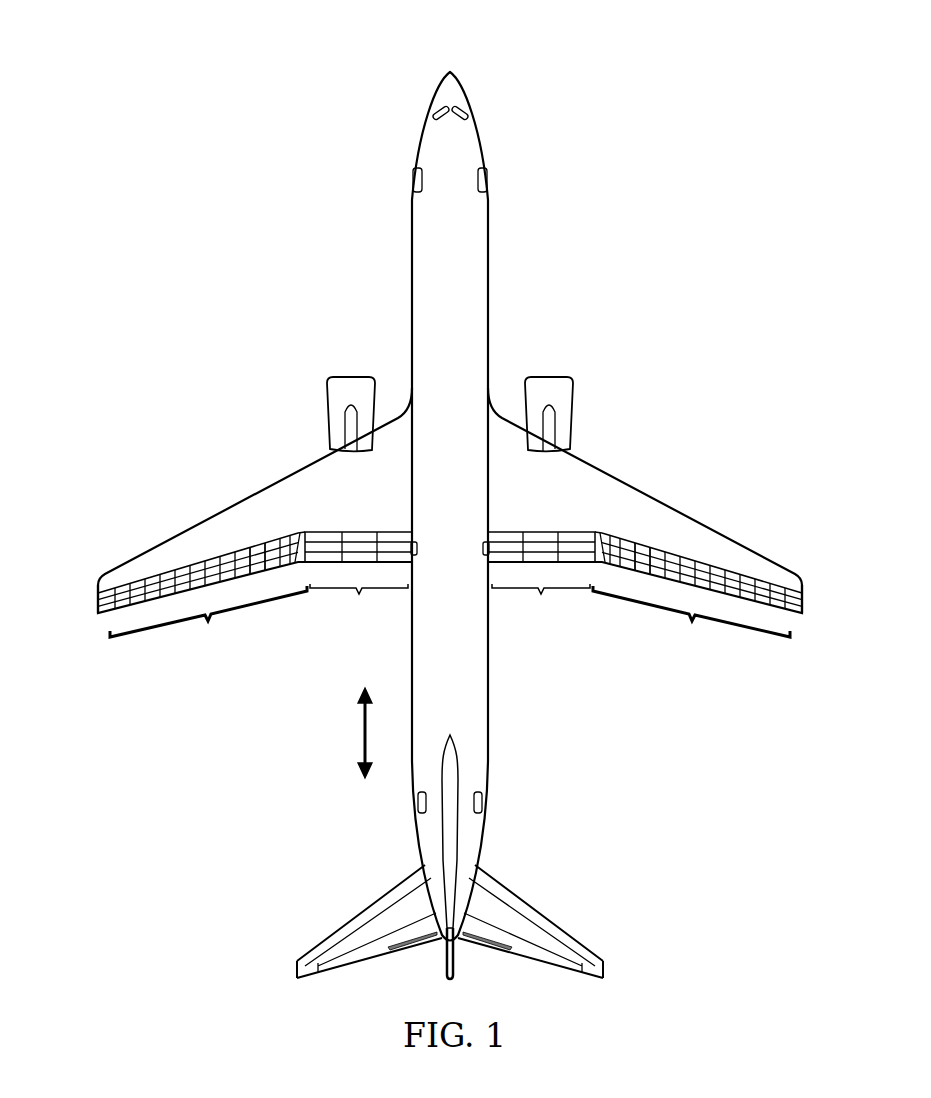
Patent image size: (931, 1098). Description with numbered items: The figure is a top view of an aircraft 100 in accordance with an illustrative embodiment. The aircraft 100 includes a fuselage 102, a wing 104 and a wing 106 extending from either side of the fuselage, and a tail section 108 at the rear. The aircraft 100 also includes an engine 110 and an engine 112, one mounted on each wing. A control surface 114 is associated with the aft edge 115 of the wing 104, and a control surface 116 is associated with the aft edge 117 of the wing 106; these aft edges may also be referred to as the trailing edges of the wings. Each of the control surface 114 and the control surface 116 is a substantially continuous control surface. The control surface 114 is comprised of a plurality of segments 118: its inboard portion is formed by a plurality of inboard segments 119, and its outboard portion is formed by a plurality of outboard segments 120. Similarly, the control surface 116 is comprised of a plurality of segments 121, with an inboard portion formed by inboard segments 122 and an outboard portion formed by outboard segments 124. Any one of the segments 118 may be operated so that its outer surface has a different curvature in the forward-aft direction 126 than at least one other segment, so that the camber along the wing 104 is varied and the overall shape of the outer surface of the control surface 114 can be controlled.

The aircraft 100 is at (410, 71).
The fuselage 102 is at (490, 223).
The wing 104 is at (236, 484).
The wing 106 is at (659, 484).
The tail section 108 is at (373, 975).
The engine 110 is at (344, 362).
The engine 112 is at (556, 362).
The control surface 114 is at (261, 586).
The aft edge 115 is at (96, 624).
The control surface 116 is at (639, 586).
The aft edge 117 is at (804, 624).
The segments 118 is at (180, 554).
The inboard segments 119 is at (361, 578).
The outboard segments 120 is at (208, 618).
The segments 121 is at (720, 554).
The inboard segments 122 is at (539, 578).
The outboard segments 124 is at (691, 619).
The forward-aft direction 126 is at (360, 736).